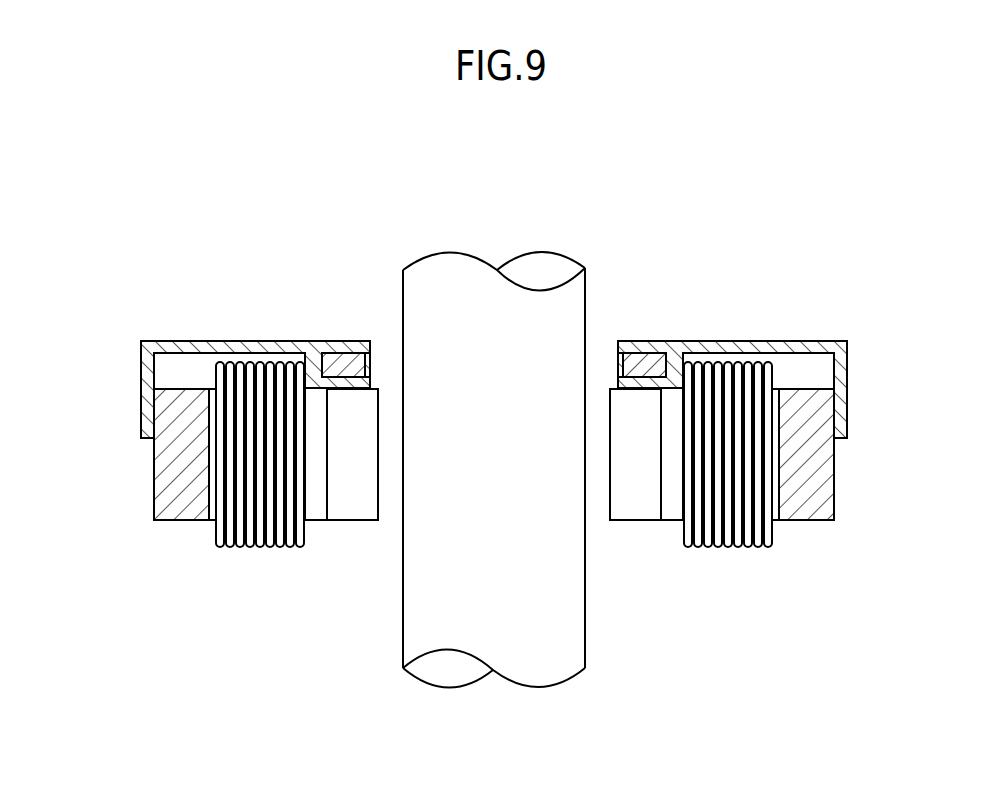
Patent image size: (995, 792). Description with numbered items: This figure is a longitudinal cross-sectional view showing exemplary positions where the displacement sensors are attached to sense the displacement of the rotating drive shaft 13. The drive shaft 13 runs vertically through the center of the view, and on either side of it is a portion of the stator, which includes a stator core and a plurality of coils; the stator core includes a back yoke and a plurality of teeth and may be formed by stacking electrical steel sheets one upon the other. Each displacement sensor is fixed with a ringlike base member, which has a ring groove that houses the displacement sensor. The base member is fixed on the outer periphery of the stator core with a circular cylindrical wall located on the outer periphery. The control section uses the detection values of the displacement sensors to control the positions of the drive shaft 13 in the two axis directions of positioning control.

The drive shaft 13 is at (442, 272).